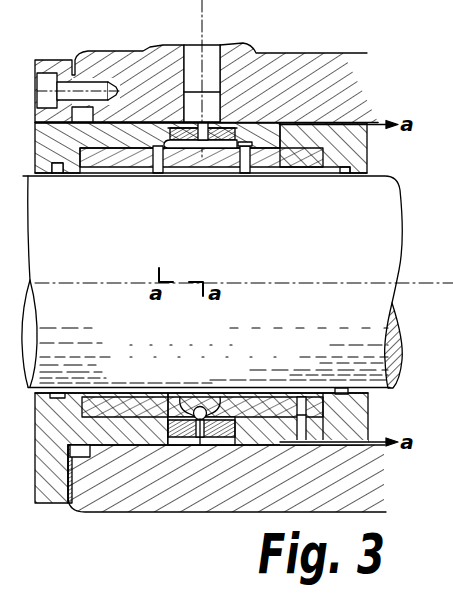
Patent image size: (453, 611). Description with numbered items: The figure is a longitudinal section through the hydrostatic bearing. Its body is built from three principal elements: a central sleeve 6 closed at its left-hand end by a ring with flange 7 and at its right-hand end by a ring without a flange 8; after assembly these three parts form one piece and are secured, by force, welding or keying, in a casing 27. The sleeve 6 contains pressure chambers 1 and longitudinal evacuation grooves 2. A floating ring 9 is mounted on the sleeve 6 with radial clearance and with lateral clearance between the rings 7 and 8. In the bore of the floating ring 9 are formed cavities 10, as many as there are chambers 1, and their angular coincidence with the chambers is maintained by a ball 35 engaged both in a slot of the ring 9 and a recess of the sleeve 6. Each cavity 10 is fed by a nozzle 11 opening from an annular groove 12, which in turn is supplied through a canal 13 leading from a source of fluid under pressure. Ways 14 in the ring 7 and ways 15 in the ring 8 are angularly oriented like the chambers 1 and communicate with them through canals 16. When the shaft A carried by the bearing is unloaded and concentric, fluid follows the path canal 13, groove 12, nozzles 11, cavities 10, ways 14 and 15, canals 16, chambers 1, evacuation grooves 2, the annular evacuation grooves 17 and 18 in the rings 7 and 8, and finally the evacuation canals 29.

The pressure chamber 1 is at (293, 171).
The evacuation groove 2 is at (270, 393).
The central sleeve 6 is at (285, 162).
The ring with flange 7 is at (72, 170).
The ring without flange 8 is at (331, 170).
The floating ring 9 is at (190, 408).
The cavity 10 is at (216, 153).
The nozzle 11 is at (185, 151).
The annular groove 12 is at (221, 442).
The canal 13 is at (216, 52).
The way 14 is at (155, 142).
The way 15 is at (240, 140).
The canal 16 is at (152, 163).
The annular evacuation groove 17 is at (58, 384).
The annular evacuation groove 18 is at (342, 390).
The casing 27 is at (323, 62).
The evacuation canal 29 is at (315, 423).
The ball 35 is at (195, 406).
The shaft A is at (383, 260).